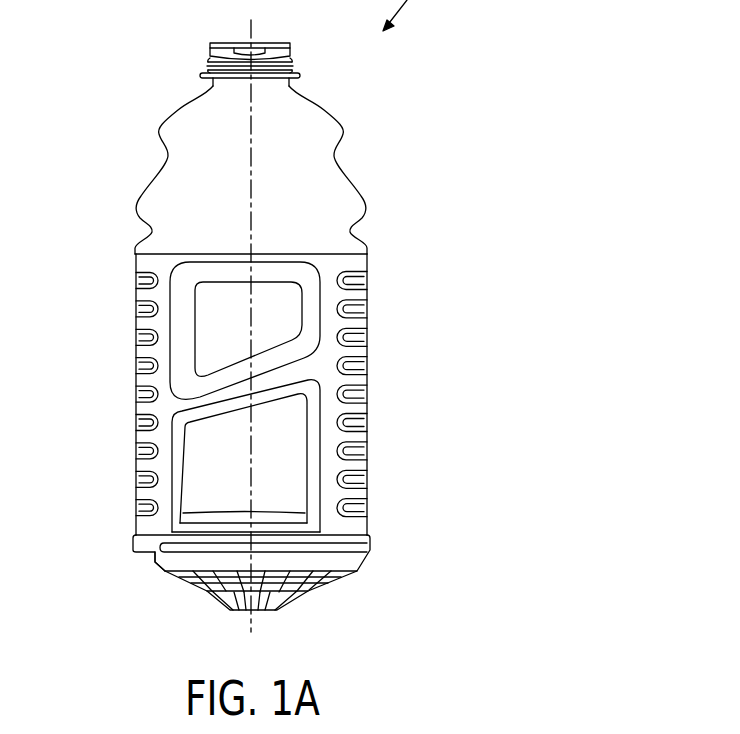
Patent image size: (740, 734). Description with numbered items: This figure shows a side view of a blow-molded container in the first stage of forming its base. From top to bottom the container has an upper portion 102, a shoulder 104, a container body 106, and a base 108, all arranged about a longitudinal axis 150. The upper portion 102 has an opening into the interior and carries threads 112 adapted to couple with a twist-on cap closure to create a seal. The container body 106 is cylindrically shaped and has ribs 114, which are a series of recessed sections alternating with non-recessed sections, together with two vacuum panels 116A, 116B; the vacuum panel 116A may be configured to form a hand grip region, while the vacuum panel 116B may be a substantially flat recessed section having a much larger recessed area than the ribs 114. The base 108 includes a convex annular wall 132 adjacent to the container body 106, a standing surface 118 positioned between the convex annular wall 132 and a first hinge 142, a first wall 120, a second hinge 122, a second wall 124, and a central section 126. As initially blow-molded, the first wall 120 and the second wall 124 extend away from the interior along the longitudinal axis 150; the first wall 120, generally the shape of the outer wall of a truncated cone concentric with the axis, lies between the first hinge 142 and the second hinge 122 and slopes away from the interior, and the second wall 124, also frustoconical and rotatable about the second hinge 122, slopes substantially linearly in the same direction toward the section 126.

The upper portion 102 is at (90, 42).
The shoulder 104 is at (90, 83).
The container body 106 is at (90, 258).
The base 108 is at (90, 553).
The threads 112 is at (290, 54).
The ribs 114 is at (367, 352).
The vacuum panel 116A is at (270, 296).
The vacuum panel 116B is at (285, 498).
The standing surface 118 is at (160, 578).
The first wall 120 is at (181, 586).
The second hinge 122 is at (307, 588).
The second wall 124 is at (211, 602).
The section 126 is at (246, 612).
The convex annular wall 132 is at (378, 550).
The first hinge 142 is at (340, 576).
The longitudinal axis 150 is at (253, 28).